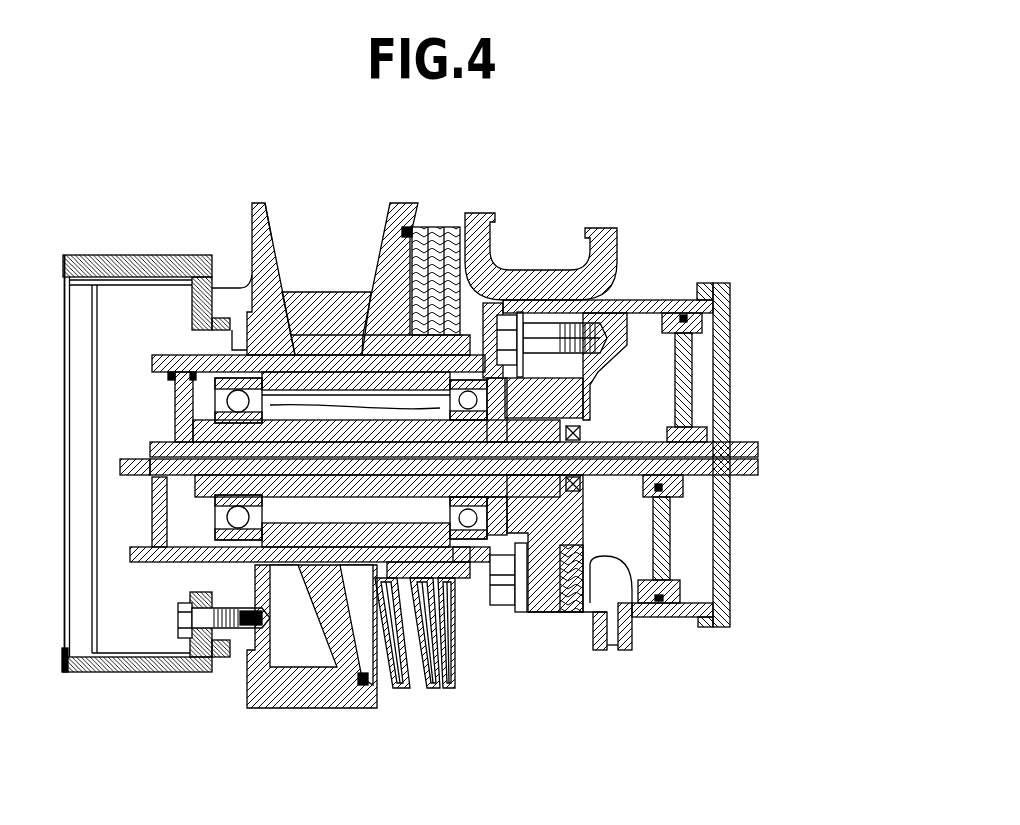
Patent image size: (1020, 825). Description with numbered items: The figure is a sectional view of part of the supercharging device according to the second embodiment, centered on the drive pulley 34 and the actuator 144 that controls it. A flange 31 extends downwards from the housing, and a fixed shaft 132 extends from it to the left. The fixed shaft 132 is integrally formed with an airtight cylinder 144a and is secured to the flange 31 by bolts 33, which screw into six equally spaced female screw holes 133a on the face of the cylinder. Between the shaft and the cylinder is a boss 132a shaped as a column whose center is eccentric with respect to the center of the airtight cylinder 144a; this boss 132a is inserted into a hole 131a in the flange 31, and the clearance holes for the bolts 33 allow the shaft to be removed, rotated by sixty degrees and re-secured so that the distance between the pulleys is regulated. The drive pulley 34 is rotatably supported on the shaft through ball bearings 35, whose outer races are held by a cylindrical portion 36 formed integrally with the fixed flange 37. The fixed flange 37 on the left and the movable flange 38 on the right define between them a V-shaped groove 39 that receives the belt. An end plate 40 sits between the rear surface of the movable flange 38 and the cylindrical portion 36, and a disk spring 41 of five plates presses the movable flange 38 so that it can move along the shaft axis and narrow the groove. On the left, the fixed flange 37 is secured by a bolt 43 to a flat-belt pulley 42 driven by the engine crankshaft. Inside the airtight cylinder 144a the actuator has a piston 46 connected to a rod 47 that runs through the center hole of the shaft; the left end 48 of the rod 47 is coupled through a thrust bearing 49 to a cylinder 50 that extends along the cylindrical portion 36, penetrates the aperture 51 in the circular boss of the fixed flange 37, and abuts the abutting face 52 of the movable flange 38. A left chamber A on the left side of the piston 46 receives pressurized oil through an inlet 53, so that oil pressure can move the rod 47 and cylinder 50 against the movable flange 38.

The flange 31 is at (606, 265).
The bolts 33 is at (505, 598).
The drive pulley 34 is at (275, 658).
The ball bearings 35 is at (350, 393).
The cylindrical portion 36 is at (363, 563).
The fixed flange 37 is at (267, 253).
The movable flange 38 is at (385, 262).
The V-shaped groove 39 is at (268, 242).
The end plate 40 is at (468, 580).
The disk spring 41 is at (450, 667).
The pulley 42 is at (118, 673).
The bolt 43 is at (178, 622).
The piston 46 is at (668, 535).
The rod 47 is at (618, 472).
The left end 48 is at (125, 461).
The thrust bearing 49 is at (177, 402).
The cylinder 50 is at (170, 565).
The aperture 51 is at (257, 357).
The abutting face 52 is at (300, 567).
The inlet 53 is at (632, 633).
The hole 131a is at (560, 613).
The fixed shaft 132 is at (515, 421).
The boss 132a is at (487, 340).
The female screw holes 133a is at (578, 322).
The actuator 144 is at (756, 324).
The airtight cylinder 144a is at (622, 332).
The left chamber A is at (606, 562).